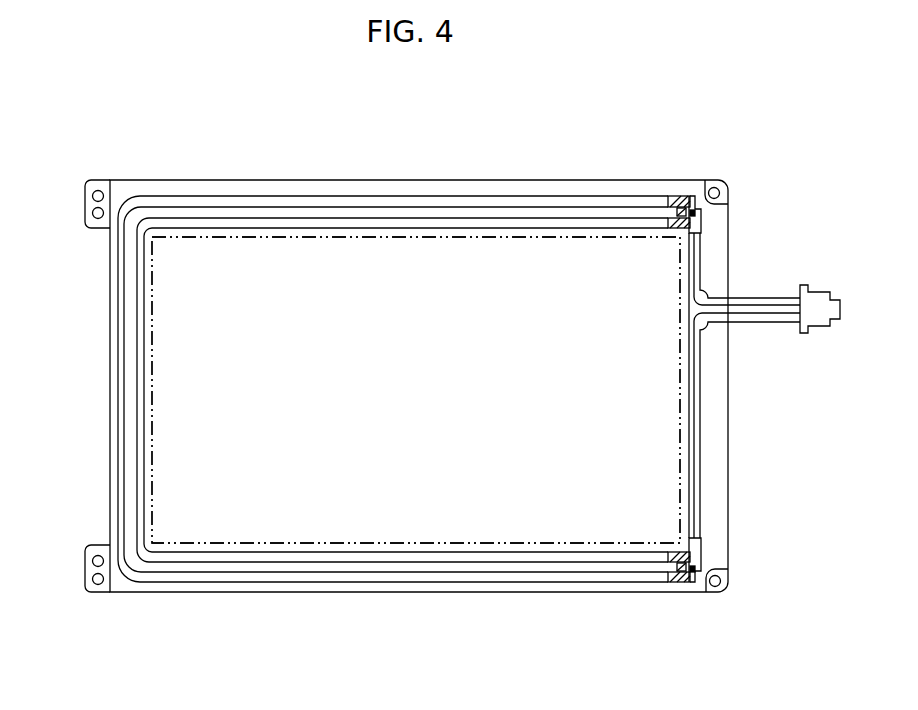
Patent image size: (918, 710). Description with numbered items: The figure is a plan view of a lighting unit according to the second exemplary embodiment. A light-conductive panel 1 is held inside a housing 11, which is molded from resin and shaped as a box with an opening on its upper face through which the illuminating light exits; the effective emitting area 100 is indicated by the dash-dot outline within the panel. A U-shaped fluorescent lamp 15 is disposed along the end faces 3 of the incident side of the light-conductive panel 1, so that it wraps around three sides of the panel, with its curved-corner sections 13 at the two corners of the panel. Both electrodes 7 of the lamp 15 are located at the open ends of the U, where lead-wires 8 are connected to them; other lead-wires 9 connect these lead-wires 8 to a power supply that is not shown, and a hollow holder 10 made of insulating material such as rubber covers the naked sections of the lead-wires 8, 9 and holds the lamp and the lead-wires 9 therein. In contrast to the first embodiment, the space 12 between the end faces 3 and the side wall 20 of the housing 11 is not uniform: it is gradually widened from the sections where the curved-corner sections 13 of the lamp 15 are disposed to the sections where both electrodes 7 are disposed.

The light-conductive panel 1 is at (410, 270).
The end faces 3 is at (356, 228).
The electrodes 7 is at (672, 197).
The lead-wires 8 is at (700, 212).
The other lead-wires 9 is at (740, 300).
The hollow holder 10 is at (684, 196).
The housing 11 is at (236, 183).
The space 12 is at (573, 228).
The curved-corner sections 13 is at (148, 214).
The U-shaped fluorescent lamp 15 is at (125, 359).
The side wall 20 is at (120, 323).
The effective emitting area 100 is at (290, 240).